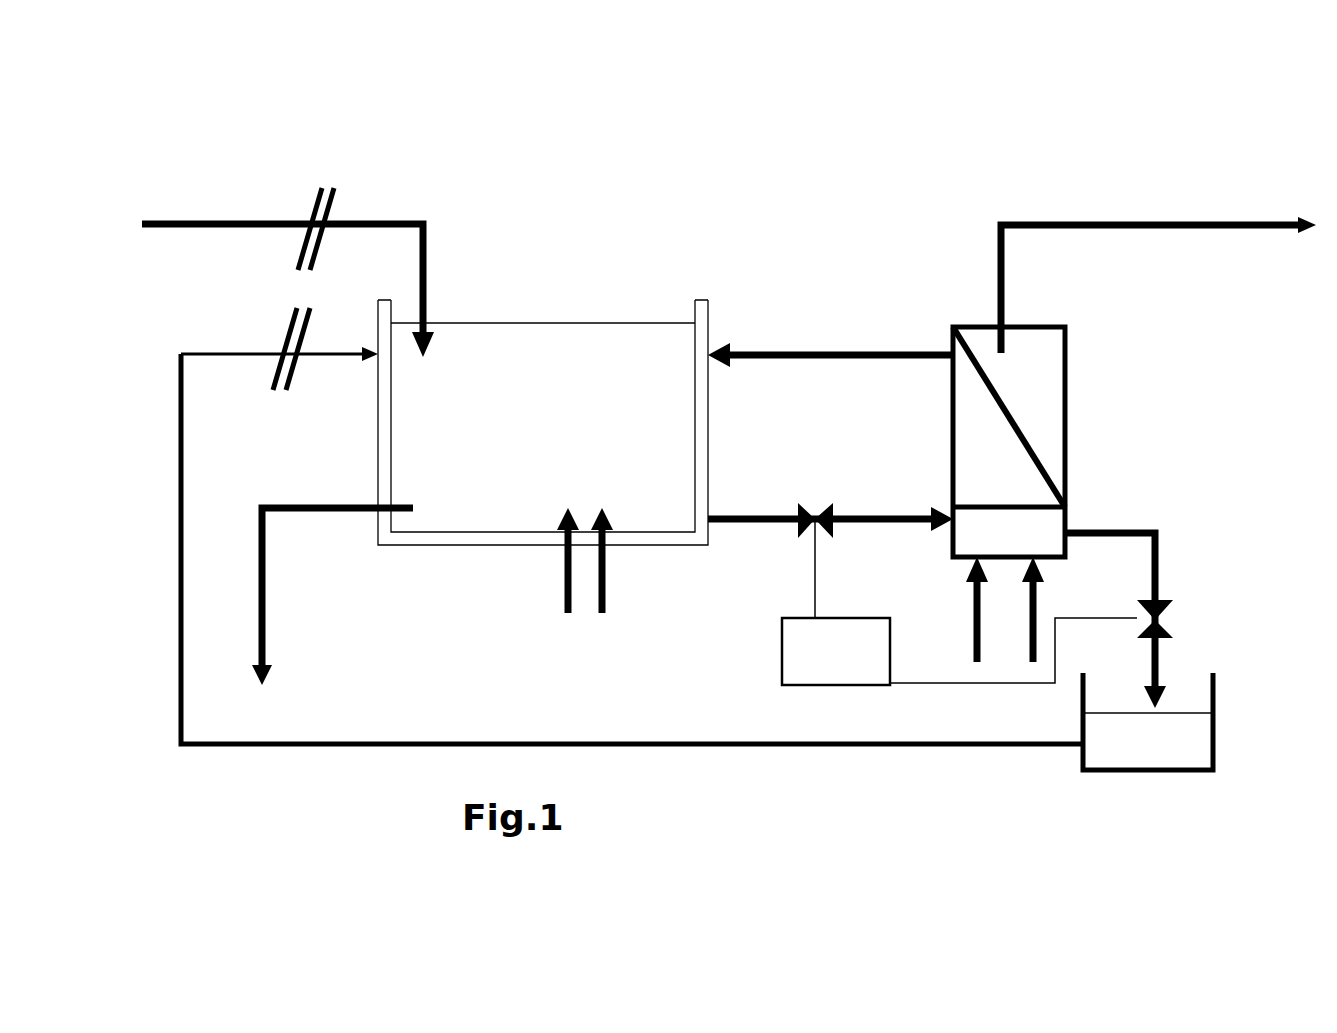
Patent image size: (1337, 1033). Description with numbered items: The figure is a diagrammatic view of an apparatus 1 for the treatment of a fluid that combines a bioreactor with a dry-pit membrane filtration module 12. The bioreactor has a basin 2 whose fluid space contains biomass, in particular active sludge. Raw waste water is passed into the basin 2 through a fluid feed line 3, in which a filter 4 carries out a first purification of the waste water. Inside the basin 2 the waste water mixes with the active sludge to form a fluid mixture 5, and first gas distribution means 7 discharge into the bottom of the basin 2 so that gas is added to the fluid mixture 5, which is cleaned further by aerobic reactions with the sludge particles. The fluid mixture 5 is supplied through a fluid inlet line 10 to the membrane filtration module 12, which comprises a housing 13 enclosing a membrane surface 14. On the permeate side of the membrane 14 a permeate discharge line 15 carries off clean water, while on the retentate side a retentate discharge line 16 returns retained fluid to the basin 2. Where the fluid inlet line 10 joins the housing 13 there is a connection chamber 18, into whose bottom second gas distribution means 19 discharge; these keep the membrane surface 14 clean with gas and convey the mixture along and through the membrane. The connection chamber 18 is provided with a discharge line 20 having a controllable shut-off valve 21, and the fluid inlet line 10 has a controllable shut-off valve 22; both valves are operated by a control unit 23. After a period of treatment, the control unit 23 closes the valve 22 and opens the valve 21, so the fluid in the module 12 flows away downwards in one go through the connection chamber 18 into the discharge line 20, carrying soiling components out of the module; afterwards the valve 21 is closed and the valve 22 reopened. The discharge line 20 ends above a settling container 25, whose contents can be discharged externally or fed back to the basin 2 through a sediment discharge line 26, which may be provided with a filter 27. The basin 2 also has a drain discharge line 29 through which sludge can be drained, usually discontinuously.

The apparatus 1 is at (668, 205).
The basin 2 is at (378, 462).
The fluid feed line 3 is at (172, 223).
The filter 4 is at (335, 198).
The fluid mixture 5 is at (563, 323).
The first gas distribution means 7 is at (607, 568).
The fluid inlet line 10 is at (858, 525).
The membrane filtration module 12 is at (1092, 388).
The housing 13 is at (953, 418).
The membrane surface 14 is at (1018, 425).
The permeate discharge line 15 is at (1148, 222).
The retentate discharge line 16 is at (850, 352).
The connection chamber 18 is at (950, 533).
The second gas distribution means 19 is at (970, 615).
The discharge line 20 is at (1160, 668).
The controllable shut-off valve 21 is at (1165, 600).
The controllable shut-off valve 22 is at (810, 505).
The control unit 23 is at (959, 651).
The settling container 25 is at (1200, 754).
The sediment discharge line 26 is at (745, 748).
The filter 27 is at (270, 374).
The drain discharge line 29 is at (263, 600).